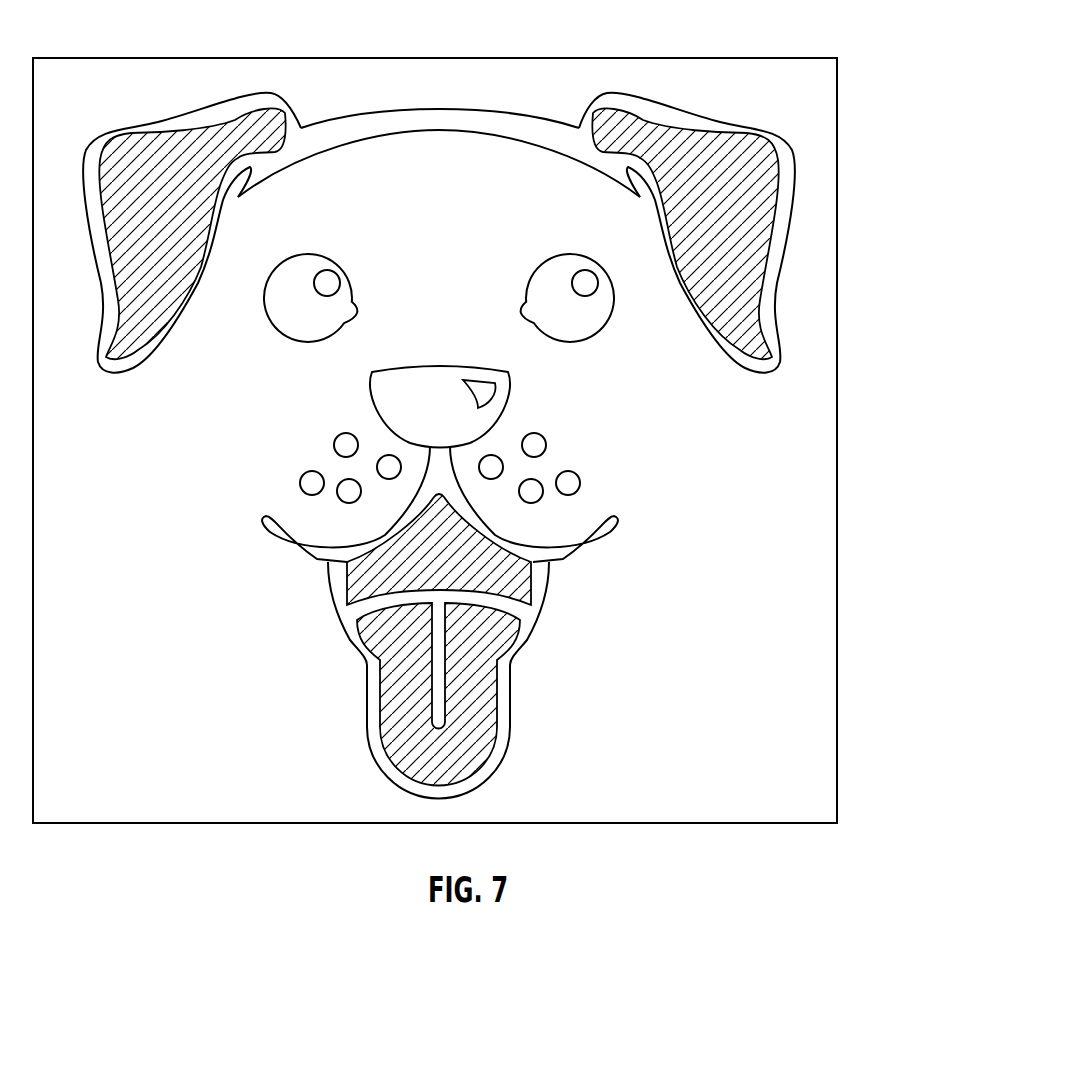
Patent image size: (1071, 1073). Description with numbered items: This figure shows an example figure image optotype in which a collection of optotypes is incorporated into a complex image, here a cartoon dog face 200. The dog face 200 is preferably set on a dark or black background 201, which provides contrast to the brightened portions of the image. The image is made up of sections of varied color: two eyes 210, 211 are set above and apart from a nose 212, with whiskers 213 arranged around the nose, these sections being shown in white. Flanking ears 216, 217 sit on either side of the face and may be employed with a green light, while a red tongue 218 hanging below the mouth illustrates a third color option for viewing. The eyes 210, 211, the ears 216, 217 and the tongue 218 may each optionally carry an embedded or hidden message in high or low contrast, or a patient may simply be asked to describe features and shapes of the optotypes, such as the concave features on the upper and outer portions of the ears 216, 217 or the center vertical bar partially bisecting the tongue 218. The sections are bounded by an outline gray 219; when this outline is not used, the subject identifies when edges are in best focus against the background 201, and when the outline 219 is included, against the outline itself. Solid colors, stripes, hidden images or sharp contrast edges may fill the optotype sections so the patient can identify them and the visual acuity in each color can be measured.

The cartoon dog face 200 is at (853, 453).
The dark or black background 201 is at (853, 205).
The eye 210 is at (300, 262).
The eye 211 is at (560, 260).
The nose 212 is at (428, 368).
The whiskers 213 is at (334, 446).
The ear 216 is at (142, 175).
The ear 217 is at (717, 173).
The tongue 218 is at (382, 567).
The outline gray 219 is at (463, 118).